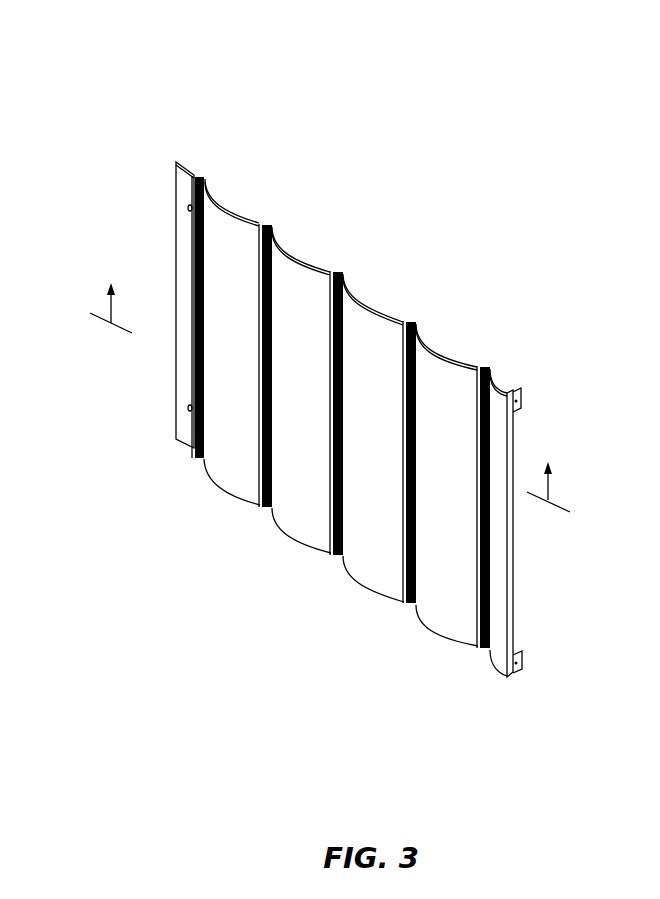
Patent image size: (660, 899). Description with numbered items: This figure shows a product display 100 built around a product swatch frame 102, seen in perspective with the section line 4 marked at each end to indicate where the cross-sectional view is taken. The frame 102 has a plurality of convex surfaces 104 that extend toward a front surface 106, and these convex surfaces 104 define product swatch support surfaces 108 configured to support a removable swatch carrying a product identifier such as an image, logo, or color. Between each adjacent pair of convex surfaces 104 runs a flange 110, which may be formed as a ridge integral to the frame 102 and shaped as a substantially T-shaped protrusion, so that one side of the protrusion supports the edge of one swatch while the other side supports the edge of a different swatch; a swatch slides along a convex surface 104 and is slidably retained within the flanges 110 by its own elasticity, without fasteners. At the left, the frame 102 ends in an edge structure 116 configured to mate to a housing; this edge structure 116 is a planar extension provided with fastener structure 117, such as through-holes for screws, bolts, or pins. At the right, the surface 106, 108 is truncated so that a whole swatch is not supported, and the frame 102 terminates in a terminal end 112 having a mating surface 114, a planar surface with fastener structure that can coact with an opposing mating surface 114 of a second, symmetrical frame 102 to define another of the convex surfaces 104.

The product display 100 is at (373, 26).
The product swatch frame 102 is at (474, 156).
The convex surfaces 104 is at (409, 448).
The front surface 106 is at (212, 298).
The product swatch support surfaces 108 is at (212, 370).
The flange 110 is at (198, 176).
The terminal end 112 is at (566, 529).
The mating surface 114 is at (520, 398).
The edge structure 116 is at (108, 277).
The fastener structure 117 is at (188, 208).
The section line 4- 4 is at (328, 397).